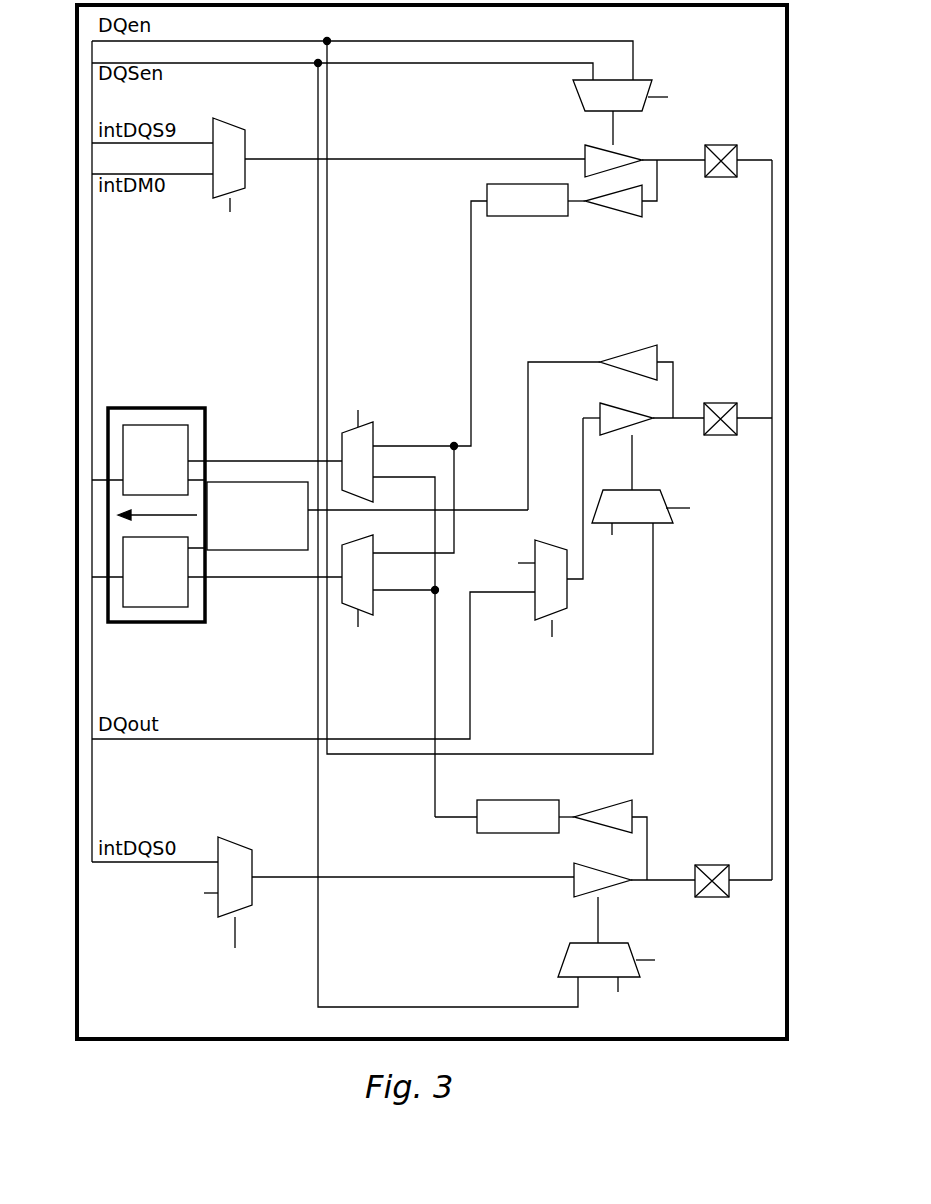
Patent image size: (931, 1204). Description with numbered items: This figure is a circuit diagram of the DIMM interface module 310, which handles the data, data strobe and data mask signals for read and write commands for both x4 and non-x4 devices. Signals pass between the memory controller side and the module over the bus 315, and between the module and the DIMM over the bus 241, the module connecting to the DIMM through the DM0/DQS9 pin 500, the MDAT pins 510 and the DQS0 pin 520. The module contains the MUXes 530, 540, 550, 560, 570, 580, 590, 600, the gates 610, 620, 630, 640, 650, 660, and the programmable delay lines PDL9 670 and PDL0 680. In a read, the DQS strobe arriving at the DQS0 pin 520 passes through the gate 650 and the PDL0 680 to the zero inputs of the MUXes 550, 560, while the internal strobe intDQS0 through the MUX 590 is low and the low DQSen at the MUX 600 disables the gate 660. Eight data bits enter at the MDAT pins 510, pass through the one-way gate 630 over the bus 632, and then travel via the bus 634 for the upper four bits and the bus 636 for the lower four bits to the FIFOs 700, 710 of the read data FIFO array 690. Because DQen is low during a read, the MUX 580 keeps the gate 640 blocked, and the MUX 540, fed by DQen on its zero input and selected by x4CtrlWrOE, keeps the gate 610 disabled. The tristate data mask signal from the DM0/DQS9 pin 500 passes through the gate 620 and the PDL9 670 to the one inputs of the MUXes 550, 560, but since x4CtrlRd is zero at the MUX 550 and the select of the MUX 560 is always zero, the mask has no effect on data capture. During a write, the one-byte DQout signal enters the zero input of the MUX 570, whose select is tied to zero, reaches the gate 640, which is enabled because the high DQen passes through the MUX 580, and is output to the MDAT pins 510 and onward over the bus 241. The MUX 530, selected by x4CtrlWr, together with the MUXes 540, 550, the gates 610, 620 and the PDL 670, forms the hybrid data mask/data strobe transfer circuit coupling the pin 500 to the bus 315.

The DIMM interface module 310 is at (778, 40).
The bus 315 is at (92, 263).
The bus 241 is at (849, 265).
The DM0/DQS9 pin 500 is at (723, 145).
The MDAT pins 510 is at (708, 436).
The DQS0 pin 520 is at (712, 897).
The MUX 530 is at (234, 122).
The MUX 540 is at (573, 95).
The MUX 550 is at (378, 432).
The MUX 560 is at (365, 612).
The MUX 570 is at (560, 613).
The MUX 580 is at (640, 490).
The MUX 590 is at (246, 838).
The MUX 600 is at (570, 953).
The gate 610 is at (623, 148).
The gate 620 is at (612, 219).
The gate 630 is at (627, 350).
The gate 640 is at (607, 403).
The gate 650 is at (633, 802).
The gate 660 is at (605, 888).
The PDL9 670 is at (528, 219).
The PDL0 680 is at (517, 835).
The read data FIFO array 690 is at (200, 498).
The FIFO 700 is at (140, 486).
The FIFO 710 is at (140, 598).
The bus 632 is at (480, 513).
The bus 634 is at (246, 480).
The bus 636 is at (246, 552).